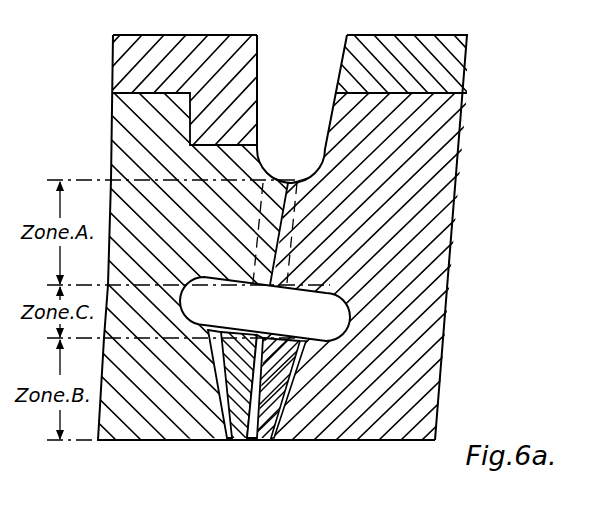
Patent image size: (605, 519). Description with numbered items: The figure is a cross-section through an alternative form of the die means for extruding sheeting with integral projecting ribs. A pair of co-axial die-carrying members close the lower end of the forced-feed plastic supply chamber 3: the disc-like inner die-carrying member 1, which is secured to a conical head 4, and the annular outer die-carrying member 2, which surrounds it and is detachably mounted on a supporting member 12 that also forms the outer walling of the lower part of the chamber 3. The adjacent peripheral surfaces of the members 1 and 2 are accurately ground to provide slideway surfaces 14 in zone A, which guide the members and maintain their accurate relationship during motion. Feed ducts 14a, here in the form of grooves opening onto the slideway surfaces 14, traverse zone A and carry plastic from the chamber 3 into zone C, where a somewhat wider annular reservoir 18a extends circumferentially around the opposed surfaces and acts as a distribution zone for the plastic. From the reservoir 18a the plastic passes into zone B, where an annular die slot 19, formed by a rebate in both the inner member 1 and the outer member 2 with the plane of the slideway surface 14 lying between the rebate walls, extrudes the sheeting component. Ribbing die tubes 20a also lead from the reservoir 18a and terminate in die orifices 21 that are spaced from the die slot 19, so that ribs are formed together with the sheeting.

The inner die-carrying member 1 is at (435, 157).
The outer die-carrying member 2 is at (118, 140).
The plastic supply chamber 3 is at (279, 89).
The conical head 4 is at (452, 70).
The supporting member 12 is at (128, 67).
The slideway surfaces 14 is at (272, 252).
The feed ducts 14a is at (278, 183).
The annular reservoir 18a is at (327, 315).
The annular die slot 19 is at (251, 428).
The ribbing die tubes 20a is at (224, 405).
The die orifices 21 is at (232, 441).